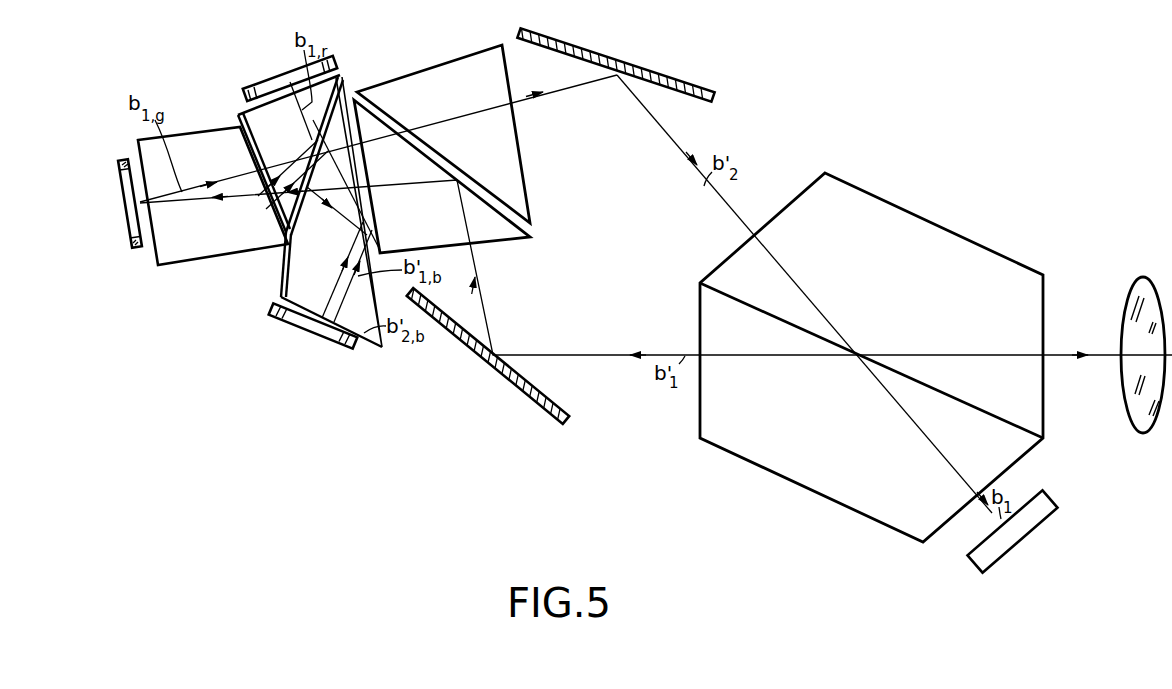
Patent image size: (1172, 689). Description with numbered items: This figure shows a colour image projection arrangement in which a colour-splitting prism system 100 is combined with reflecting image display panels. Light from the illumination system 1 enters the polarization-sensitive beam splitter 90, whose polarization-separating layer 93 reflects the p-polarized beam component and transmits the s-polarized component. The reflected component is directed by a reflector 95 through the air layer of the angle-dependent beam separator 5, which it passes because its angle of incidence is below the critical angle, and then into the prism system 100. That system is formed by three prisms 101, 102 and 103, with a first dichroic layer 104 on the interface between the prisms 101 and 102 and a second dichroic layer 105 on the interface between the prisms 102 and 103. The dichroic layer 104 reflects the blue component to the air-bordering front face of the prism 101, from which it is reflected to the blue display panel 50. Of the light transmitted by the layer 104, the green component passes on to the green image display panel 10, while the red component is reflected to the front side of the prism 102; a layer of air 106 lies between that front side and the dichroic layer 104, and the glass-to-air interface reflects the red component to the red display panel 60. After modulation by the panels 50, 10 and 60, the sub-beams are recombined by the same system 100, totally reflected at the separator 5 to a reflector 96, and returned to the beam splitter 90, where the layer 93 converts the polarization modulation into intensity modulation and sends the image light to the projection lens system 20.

The illumination system 1 is at (1036, 528).
The angle-dependent beam separator 5 is at (462, 50).
The image display panel 10 is at (128, 222).
The projection lens system 20 is at (1143, 433).
The blue display panel 50 is at (300, 322).
The red display panel 60 is at (281, 86).
The polarization-sensitive beam splitter 90 is at (808, 491).
The polarization-separating layer 93 is at (1022, 428).
The reflector 95 is at (539, 406).
The reflector 96 is at (668, 83).
The colour-splitting prism system 100 is at (228, 270).
The prism 101 is at (374, 336).
The prism 102 is at (243, 116).
The prism 103 is at (166, 256).
The first dichroic layer 104 is at (341, 88).
The second dichroic layer 105 is at (272, 218).
The layer of air 106 is at (278, 258).